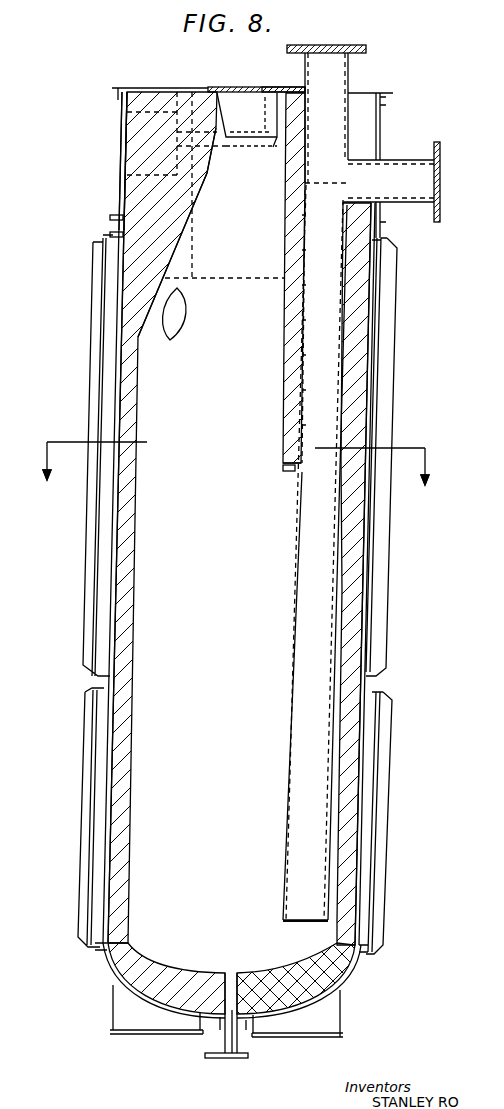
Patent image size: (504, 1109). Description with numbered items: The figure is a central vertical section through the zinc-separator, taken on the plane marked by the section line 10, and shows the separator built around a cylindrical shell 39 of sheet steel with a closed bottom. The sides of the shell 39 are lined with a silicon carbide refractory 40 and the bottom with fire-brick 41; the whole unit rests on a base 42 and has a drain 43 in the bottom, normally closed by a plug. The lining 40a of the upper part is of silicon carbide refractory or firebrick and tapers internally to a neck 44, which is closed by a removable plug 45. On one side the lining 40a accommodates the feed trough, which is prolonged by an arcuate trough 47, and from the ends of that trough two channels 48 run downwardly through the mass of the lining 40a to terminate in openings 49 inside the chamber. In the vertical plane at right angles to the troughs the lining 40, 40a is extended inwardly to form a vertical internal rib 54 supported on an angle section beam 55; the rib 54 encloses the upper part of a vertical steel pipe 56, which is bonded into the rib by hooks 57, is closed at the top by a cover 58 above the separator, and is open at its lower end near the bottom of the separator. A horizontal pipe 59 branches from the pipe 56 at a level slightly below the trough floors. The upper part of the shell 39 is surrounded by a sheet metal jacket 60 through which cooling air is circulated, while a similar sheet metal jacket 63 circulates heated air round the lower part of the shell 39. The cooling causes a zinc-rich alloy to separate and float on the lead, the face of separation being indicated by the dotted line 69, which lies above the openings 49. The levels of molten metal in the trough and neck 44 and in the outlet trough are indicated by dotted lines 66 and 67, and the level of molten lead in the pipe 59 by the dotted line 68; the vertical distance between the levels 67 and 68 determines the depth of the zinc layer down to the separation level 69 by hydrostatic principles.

The section line 10- 10 is at (236, 463).
The cylindrical shell 39 is at (112, 562).
The silicon carbide refractory 40 is at (124, 618).
The upper lining 40a is at (122, 186).
The fire-brick 41 is at (345, 993).
The base 42 is at (283, 1038).
The drain 43 is at (227, 1043).
The neck 44 is at (217, 87).
The removable plug 45 is at (246, 87).
The arcuate trough 47 is at (127, 113).
The channels 48 is at (193, 228).
The openings 49 is at (174, 330).
The vertical internal rib 54 is at (288, 375).
The angle section beam 55 is at (288, 470).
The vertical steel pipe 56 is at (292, 572).
The hooks 57 is at (288, 415).
The cover 58 is at (332, 46).
The horizontal pipe 59 is at (402, 160).
The sheet metal jacket 60 is at (108, 344).
The sheet metal jacket 63 is at (97, 850).
The dotted line 66 is at (192, 92).
The dotted line 67 is at (279, 88).
The dotted line 68 is at (318, 183).
The dotted line 69 is at (230, 278).